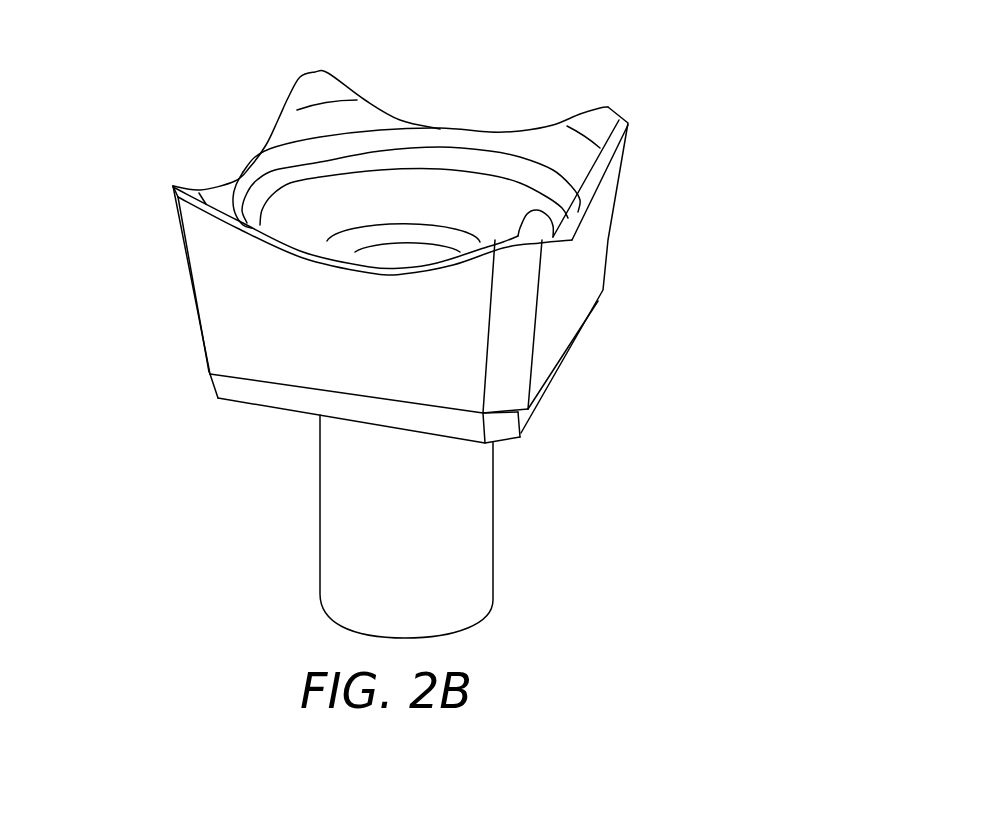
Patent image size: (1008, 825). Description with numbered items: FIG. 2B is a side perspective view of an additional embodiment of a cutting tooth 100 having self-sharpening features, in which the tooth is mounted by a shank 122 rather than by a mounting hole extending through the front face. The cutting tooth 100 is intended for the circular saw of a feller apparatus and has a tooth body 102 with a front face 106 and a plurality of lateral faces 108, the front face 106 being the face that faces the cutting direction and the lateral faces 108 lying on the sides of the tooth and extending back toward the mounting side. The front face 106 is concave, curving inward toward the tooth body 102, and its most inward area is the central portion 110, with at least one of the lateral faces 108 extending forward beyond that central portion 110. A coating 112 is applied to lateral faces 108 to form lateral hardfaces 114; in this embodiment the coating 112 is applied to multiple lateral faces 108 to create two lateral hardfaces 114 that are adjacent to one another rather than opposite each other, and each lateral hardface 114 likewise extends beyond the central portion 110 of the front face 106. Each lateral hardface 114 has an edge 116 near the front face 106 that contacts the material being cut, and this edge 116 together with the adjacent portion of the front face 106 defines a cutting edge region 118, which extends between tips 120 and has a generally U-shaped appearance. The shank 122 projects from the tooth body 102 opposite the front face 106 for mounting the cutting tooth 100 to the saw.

The cutting tooth 100 is at (662, 100).
The tooth body 102 is at (603, 232).
The front face 106 is at (521, 140).
The lateral faces 108 is at (218, 330).
The central portion 110 is at (397, 230).
The coating 112 is at (199, 262).
The lateral hardface 114 is at (232, 386).
The edge 116 is at (194, 212).
The cutting edge region 118 is at (327, 262).
The tips 120 is at (176, 183).
The shank 122 is at (482, 530).